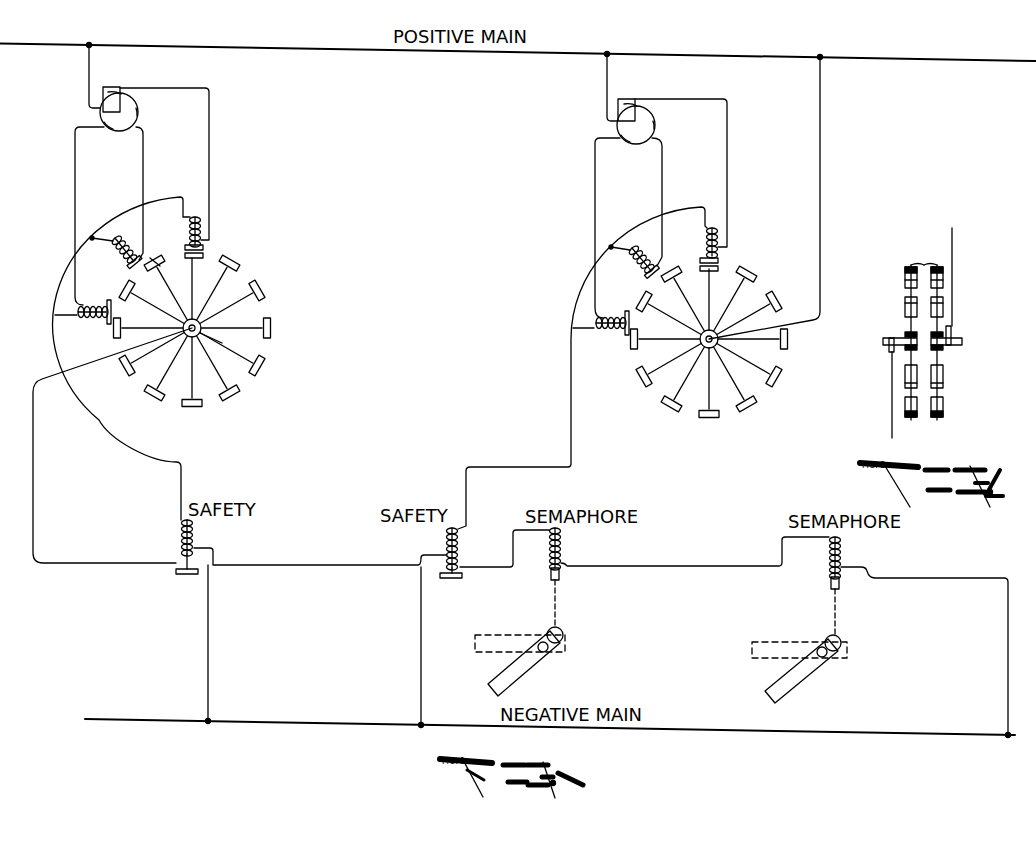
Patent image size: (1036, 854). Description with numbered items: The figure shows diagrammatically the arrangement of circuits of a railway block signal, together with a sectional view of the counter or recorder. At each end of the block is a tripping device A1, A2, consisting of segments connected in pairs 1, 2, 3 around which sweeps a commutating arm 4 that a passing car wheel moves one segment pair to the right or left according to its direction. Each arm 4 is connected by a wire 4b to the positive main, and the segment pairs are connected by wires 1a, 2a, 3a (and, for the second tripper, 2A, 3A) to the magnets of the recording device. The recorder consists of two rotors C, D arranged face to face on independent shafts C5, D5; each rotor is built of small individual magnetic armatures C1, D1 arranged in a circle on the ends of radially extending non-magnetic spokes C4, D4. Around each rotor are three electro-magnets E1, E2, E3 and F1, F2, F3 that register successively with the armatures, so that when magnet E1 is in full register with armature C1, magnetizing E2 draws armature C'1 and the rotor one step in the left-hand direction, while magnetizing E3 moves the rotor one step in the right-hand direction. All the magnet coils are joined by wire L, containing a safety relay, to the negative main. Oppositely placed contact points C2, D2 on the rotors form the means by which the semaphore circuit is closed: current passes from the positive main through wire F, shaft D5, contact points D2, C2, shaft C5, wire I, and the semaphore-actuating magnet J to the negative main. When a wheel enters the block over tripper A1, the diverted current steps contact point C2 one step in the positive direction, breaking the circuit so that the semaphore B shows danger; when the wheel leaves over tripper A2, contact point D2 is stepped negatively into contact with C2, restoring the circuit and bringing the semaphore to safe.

In FIG. 1, the wire 4b is at (88, 83).
In FIG. 1, the segments 1 is at (112, 96).
In FIG. 1, the commutating arm 4 is at (121, 110).
In FIG. 1, the segments 2 is at (139, 113).
In FIG. 1, the segments 3 is at (111, 124).
In FIG. 1, the tripping device A1 is at (95, 114).
In FIG. 1, the tripping device A2 is at (609, 125).
In FIG. 1, the wire 1a is at (209, 175).
In FIG. 1, the wire 2a is at (143, 175).
In FIG. 1, the wire 3a is at (77, 183).
In FIG. 1, the wire 2A is at (662, 177).
In FIG. 1, the wire 3A is at (595, 193).
In FIG. 1, the rotor C is at (194, 344).
In FIG. 2, the rotor C is at (898, 341).
In FIG. 1, the rotor D is at (716, 350).
In FIG. 2, the rotor D is at (947, 344).
In FIG. 1, the magnetic armature C1 is at (205, 255).
In FIG. 2, the magnetic armature C1 is at (905, 305).
In FIG. 1, the armature C'1 is at (171, 270).
In FIG. 1, the contact point C2 is at (113, 331).
In FIG. 2, the contact point C2 is at (915, 265).
In FIG. 1, the spokes C4 is at (222, 343).
In FIG. 2, the shaft C5 is at (883, 342).
In FIG. 1, the magnetic armature D1 is at (724, 266).
In FIG. 2, the magnetic armature D1 is at (945, 375).
In FIG. 2, the contact point D2 is at (937, 265).
In FIG. 1, the spokes D4 is at (665, 338).
In FIG. 2, the shaft D5 is at (958, 339).
In FIG. 1, the electro-magnet E1 is at (205, 247).
In FIG. 1, the electro-magnet E2 is at (143, 257).
In FIG. 1, the electro-magnet E3 is at (108, 305).
In FIG. 1, the electro-magnet F1 is at (720, 258).
In FIG. 1, the electro-magnet F2 is at (666, 275).
In FIG. 1, the electro-magnet F3 is at (628, 317).
In FIG. 1, the wire F is at (821, 146).
In FIG. 2, the wire F is at (955, 268).
In FIG. 1, the wire L is at (130, 449).
In FIG. 1, the wire I is at (302, 565).
In FIG. 2, the wire I is at (890, 412).
In FIG. 1, the semaphore-actuating magnet J is at (704, 558).
In FIG. 1, the semaphore B is at (661, 641).